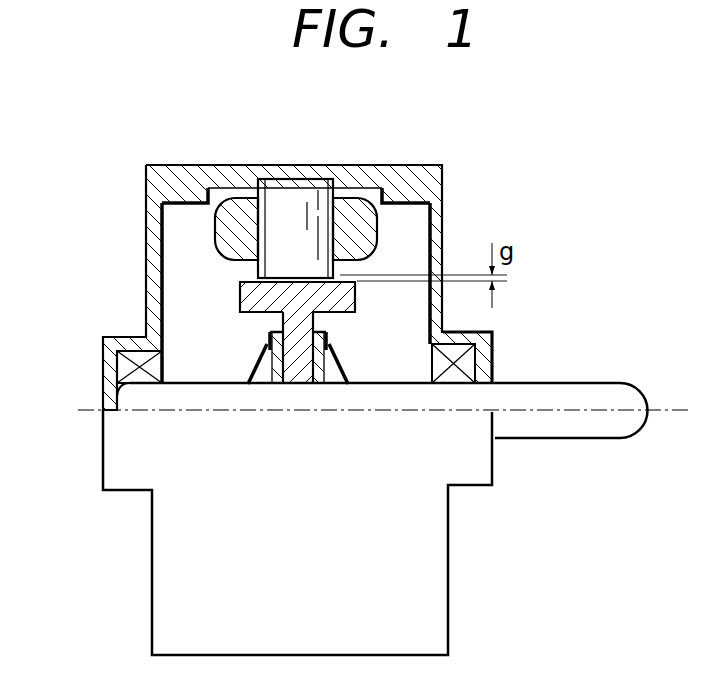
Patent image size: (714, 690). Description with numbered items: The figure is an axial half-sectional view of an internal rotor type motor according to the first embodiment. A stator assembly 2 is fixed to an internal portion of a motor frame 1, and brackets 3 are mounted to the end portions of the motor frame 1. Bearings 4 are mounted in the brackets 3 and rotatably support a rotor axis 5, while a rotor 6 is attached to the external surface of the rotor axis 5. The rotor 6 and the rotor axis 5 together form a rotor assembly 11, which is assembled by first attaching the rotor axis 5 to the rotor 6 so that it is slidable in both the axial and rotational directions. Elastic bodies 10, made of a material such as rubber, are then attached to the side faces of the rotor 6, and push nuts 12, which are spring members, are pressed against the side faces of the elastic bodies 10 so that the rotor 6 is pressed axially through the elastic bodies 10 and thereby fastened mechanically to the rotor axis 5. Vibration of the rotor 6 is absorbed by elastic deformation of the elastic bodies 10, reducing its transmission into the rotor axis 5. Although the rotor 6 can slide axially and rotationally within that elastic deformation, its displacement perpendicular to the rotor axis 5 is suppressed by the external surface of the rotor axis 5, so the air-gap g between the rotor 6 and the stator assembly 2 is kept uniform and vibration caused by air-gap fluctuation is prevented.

The motor frame 1 is at (416, 165).
The stator assembly 2 is at (302, 174).
The bracket 3 is at (440, 237).
The bearing 4 is at (498, 334).
The rotor axis 5 is at (587, 383).
The rotor 6 is at (255, 294).
The elastic body 10 is at (280, 322).
The rotor assembly 11 is at (285, 420).
The push nut 12 is at (268, 373).